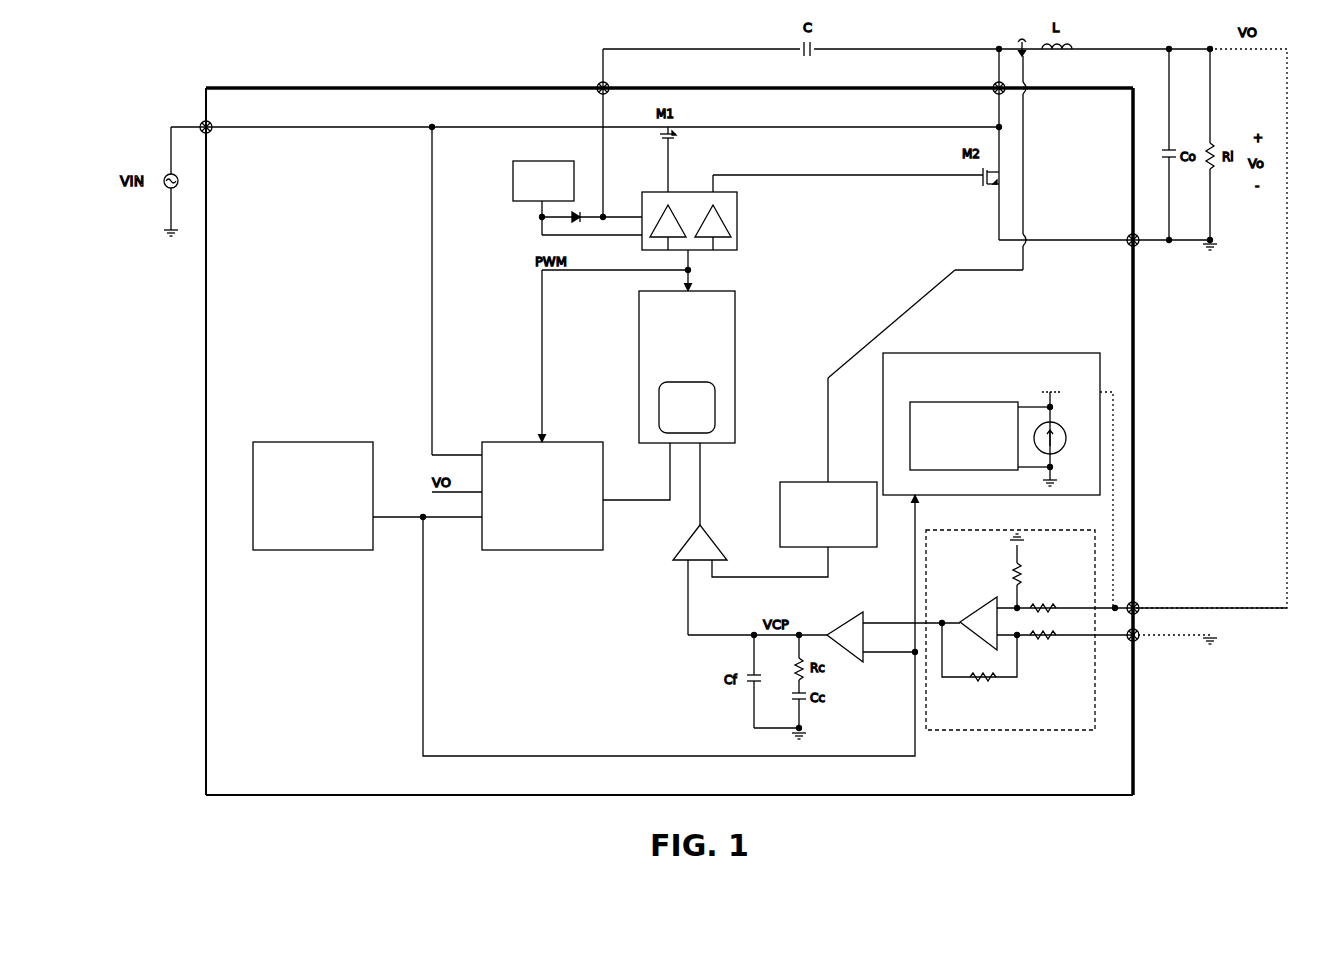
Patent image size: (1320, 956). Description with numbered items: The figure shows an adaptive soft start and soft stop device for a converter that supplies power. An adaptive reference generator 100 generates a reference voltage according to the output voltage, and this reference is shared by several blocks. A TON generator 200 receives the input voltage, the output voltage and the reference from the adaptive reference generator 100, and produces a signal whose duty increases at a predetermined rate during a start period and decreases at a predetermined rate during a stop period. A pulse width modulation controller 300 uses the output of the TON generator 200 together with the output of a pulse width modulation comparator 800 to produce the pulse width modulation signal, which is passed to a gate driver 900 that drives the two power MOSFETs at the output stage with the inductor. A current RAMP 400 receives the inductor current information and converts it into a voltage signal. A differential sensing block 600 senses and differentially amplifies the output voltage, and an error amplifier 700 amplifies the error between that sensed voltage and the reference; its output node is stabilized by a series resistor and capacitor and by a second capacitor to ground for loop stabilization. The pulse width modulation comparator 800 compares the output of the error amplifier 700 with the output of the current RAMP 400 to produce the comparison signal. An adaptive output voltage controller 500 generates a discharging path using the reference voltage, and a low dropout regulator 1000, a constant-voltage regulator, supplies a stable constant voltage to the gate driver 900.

The adaptive reference generator 100 is at (292, 442).
The TON generator 200 is at (560, 442).
The pulse width modulation (PWM) controller 300 is at (735, 323).
The current RAMP 400 is at (800, 482).
The adaptive output voltage controller 500 is at (1020, 353).
The differential sensing block 600 is at (1045, 530).
The error amplifier 700 is at (838, 655).
The pulse width modulation (PWM) comparator 800 is at (712, 536).
The gate driver 900 is at (737, 224).
The low dropout (LDO) 1000 is at (525, 161).